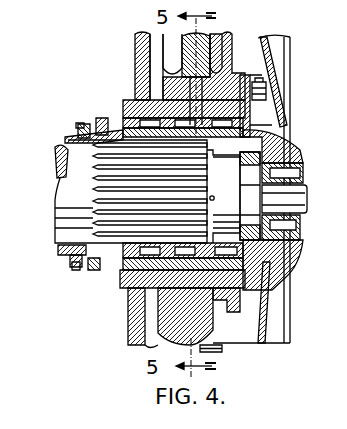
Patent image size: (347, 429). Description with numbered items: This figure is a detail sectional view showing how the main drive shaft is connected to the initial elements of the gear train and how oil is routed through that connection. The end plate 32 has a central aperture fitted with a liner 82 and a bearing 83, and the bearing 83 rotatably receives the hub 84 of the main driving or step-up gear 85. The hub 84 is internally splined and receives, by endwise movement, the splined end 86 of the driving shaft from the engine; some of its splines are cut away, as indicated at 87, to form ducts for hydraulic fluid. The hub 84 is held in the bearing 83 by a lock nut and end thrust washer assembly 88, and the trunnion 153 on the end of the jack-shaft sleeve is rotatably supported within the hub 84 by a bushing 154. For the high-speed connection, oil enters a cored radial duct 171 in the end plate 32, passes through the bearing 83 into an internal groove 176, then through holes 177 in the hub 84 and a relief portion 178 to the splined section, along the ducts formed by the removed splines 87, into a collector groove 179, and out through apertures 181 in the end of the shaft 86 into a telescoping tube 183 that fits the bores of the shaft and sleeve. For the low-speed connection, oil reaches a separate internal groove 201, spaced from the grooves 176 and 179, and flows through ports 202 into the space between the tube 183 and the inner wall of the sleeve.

The cored radial duct 171 is at (203, 40).
The internal groove 176 is at (123, 110).
The lock nut and end thrust washer assembly 88 is at (97, 124).
The holes 177 is at (72, 142).
The internal groove 201 is at (250, 128).
The ports 202 is at (290, 134).
The splined end of work shaft 86 is at (80, 170).
The bushing 154 is at (303, 165).
The apertures 181 is at (226, 190).
The telescoping tube 183 is at (306, 190).
The trunnion 153 is at (300, 220).
The cut-away splines 87 is at (55, 240).
The internal circumferential groove 179 is at (290, 250).
The relief portion 178 is at (90, 268).
The hub 84 is at (120, 283).
The liner 82 is at (128, 296).
The bearing 83 is at (243, 274).
The main driving or step-up gear 85 is at (285, 310).
The end plate 32 is at (222, 349).